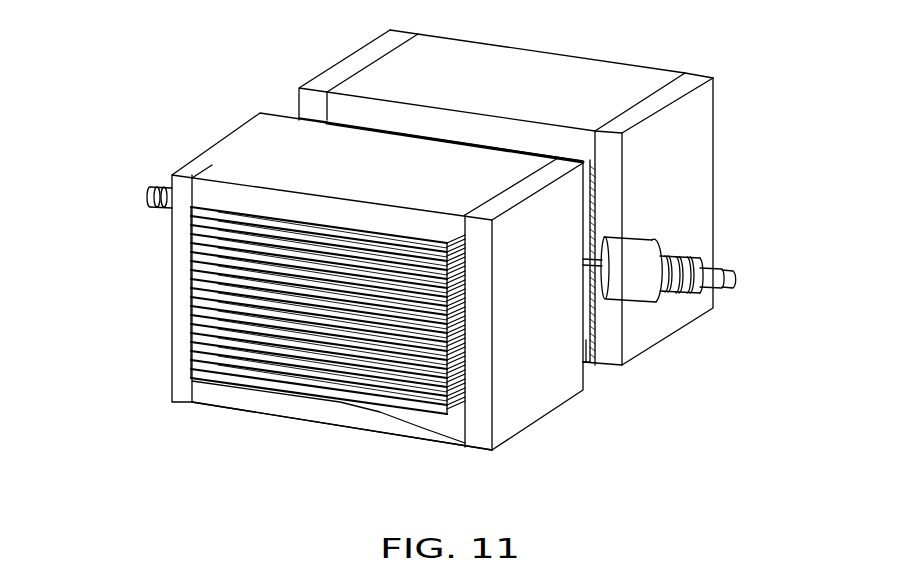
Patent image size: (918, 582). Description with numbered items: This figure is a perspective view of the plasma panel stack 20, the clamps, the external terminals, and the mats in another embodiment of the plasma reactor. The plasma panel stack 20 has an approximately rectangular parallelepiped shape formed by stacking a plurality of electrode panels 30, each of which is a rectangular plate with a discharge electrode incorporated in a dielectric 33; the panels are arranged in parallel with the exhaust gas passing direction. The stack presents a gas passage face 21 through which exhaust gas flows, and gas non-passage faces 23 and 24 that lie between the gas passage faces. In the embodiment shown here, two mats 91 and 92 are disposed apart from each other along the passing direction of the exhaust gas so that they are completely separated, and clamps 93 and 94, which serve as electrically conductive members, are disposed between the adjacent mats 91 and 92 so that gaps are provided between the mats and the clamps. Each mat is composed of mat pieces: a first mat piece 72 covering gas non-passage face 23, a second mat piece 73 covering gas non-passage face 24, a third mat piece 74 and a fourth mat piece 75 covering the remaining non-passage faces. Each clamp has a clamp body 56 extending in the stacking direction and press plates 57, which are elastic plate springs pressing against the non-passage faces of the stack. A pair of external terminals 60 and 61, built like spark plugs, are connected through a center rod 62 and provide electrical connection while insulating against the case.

The plasma panel stack 20 is at (190, 300).
The gas passage face 21 is at (312, 402).
The gas non-passage face 23 is at (378, 233).
The gas non-passage face 24 is at (466, 338).
The electrode panel 30 is at (190, 366).
The dielectric 33 is at (442, 397).
The clamp body 56 is at (590, 335).
The press plate 57 is at (591, 132).
The external terminal 60 is at (742, 280).
The external terminal 61 is at (150, 194).
The center rod 62 is at (586, 264).
The first mat piece 72 is at (452, 160).
The second mat piece 73 is at (540, 400).
The third mat piece 74 is at (358, 430).
The fourth mat piece 75 is at (176, 246).
The mat 91 is at (218, 148).
The mat 92 is at (640, 68).
The clamp 93 is at (602, 196).
The clamp 94 is at (306, 120).